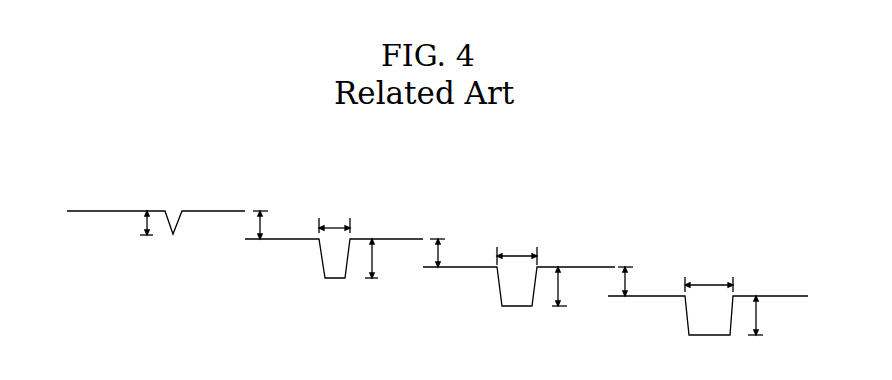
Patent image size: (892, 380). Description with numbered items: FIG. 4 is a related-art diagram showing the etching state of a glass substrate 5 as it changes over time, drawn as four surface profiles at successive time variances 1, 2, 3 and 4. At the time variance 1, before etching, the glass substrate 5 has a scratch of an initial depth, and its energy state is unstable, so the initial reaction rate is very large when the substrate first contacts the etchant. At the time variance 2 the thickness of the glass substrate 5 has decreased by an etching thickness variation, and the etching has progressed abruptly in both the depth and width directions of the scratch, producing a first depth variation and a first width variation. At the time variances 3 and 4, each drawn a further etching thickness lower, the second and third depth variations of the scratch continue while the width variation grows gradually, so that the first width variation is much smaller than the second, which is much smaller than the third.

The time variance before etching 1 is at (176, 200).
The first etching time variance 2 is at (354, 219).
The second etching time variance 3 is at (536, 233).
The third etching time variance 4 is at (708, 247).
The glass substrate 5 is at (78, 211).